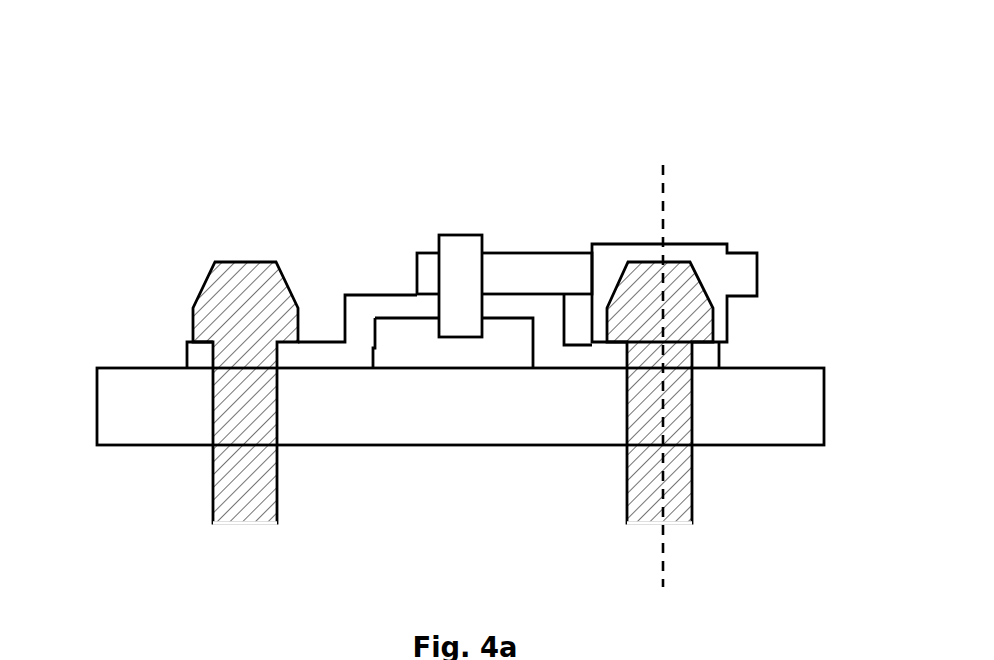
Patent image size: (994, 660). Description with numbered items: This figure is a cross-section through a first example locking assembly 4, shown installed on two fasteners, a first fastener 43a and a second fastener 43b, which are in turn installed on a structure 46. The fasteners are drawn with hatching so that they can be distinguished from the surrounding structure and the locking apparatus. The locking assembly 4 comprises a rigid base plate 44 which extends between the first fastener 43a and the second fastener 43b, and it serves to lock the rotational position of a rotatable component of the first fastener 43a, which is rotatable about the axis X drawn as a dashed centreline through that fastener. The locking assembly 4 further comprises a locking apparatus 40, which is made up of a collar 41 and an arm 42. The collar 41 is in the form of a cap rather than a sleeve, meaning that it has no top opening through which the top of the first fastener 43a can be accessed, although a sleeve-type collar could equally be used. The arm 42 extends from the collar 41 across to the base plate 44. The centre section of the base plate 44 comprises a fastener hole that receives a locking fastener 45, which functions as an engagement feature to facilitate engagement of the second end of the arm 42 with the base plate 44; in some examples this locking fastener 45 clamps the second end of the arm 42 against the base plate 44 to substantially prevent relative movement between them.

The locking assembly 4 is at (145, 143).
The locking apparatus 40 is at (618, 173).
The collar 41 is at (697, 255).
The arm 42 is at (525, 277).
The first fastener 43a is at (680, 475).
The second fastener 43b is at (230, 485).
The base plate 44 is at (370, 302).
The locking fastener 45 is at (460, 275).
The structure 46 is at (140, 388).
The axis X is at (664, 197).